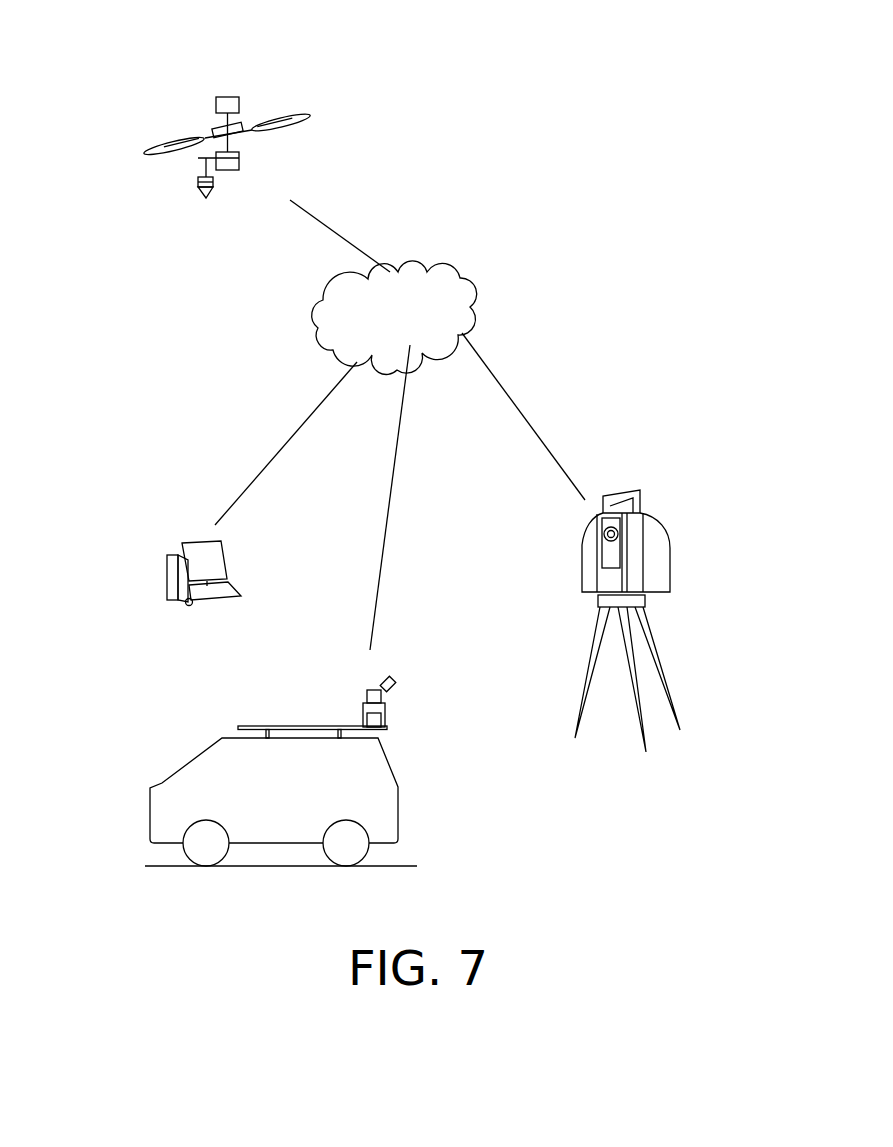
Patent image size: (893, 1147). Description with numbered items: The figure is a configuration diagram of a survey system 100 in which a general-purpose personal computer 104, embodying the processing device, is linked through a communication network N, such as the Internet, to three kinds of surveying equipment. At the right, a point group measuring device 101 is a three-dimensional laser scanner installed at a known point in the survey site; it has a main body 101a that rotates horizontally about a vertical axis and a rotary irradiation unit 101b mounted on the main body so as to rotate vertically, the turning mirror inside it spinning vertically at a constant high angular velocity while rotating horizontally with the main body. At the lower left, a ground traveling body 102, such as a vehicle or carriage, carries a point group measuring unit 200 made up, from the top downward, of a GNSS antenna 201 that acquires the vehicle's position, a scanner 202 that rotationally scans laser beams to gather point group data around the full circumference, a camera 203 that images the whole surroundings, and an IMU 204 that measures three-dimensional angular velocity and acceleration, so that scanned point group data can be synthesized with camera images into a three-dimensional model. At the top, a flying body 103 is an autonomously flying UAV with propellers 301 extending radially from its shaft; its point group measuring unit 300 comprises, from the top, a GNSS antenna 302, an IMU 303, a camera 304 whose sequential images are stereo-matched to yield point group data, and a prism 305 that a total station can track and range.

The survey system 100 is at (587, 30).
The communication network N is at (440, 263).
The flying body 103 is at (152, 110).
The point group measuring unit 300 is at (260, 96).
The propellers 301 is at (307, 117).
The GNSS antenna 302 is at (227, 97).
The IMU 303 is at (239, 156).
The camera 304 is at (239, 166).
The prism 305 is at (206, 198).
The personal computer 104 is at (153, 578).
The point group measuring device 101 is at (570, 563).
The main body 101a is at (638, 577).
The rotary irradiation unit 101b is at (617, 535).
The ground traveling body 102 is at (135, 823).
The point group measuring unit 200 is at (356, 705).
The GNSS antenna 201 is at (392, 675).
The scanner 202 is at (397, 683).
The camera 203 is at (387, 698).
The IMU 204 is at (386, 715).